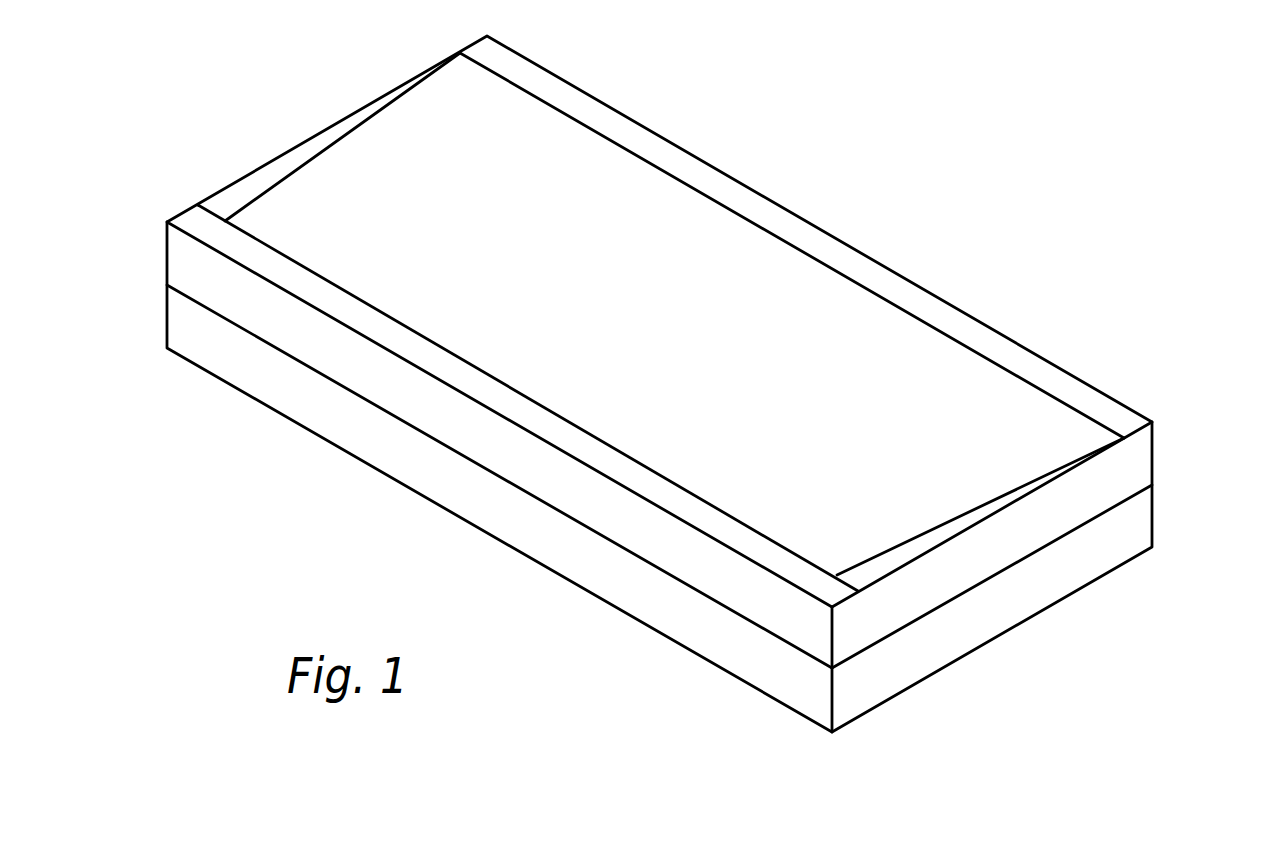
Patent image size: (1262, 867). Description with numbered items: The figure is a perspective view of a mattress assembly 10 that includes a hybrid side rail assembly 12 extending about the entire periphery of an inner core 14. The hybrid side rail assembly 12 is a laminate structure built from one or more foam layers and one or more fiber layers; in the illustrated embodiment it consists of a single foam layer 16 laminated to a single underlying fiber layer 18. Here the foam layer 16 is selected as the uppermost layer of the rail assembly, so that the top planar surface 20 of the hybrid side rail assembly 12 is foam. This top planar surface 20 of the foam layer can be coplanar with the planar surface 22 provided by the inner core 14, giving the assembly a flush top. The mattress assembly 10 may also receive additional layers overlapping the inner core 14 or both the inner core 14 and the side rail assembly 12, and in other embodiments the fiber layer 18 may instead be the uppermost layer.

The mattress assembly 10 is at (912, 192).
The hybrid side rail assembly 12 is at (1097, 383).
The inner core 14 is at (635, 333).
The foam layer 16 is at (1122, 468).
The fiber layer 18 is at (1127, 530).
The top planar surface 20 is at (980, 510).
The planar surface 22 is at (410, 193).